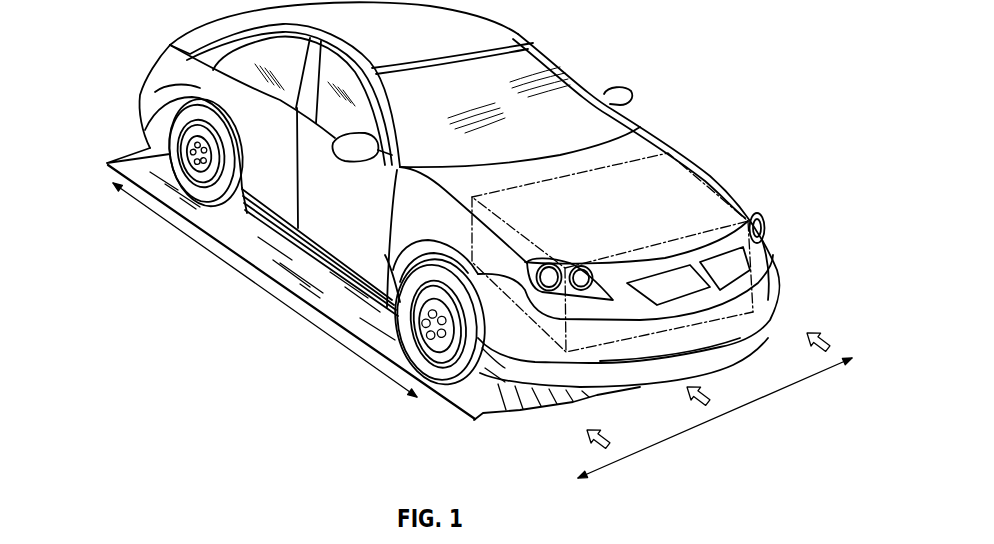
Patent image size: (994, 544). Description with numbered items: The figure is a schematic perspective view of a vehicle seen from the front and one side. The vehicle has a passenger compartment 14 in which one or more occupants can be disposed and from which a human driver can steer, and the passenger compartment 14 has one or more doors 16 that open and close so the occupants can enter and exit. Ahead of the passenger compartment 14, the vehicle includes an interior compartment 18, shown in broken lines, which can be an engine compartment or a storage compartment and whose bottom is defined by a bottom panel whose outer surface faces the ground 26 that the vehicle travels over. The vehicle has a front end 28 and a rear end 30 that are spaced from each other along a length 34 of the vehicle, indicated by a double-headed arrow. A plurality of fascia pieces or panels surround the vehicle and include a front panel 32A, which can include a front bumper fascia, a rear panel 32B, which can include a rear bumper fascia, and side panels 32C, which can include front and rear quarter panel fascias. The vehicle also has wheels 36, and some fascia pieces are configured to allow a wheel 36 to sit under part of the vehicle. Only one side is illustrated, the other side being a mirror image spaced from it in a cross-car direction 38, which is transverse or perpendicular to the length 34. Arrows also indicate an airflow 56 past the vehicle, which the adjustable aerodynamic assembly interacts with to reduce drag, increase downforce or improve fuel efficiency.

The passenger compartment 14 is at (546, 63).
The door 16 is at (381, 201).
The interior compartment 18 is at (713, 161).
The ground 26 is at (253, 248).
The front end 28 is at (678, 348).
The rear end 30 is at (147, 72).
The front panel 32A is at (743, 337).
The rear panel 32B is at (107, 163).
The side panel 32C is at (145, 128).
The length 34 is at (262, 289).
The wheel 36 is at (484, 374).
The cross-car direction 38 is at (727, 413).
The airflow 56 is at (597, 447).